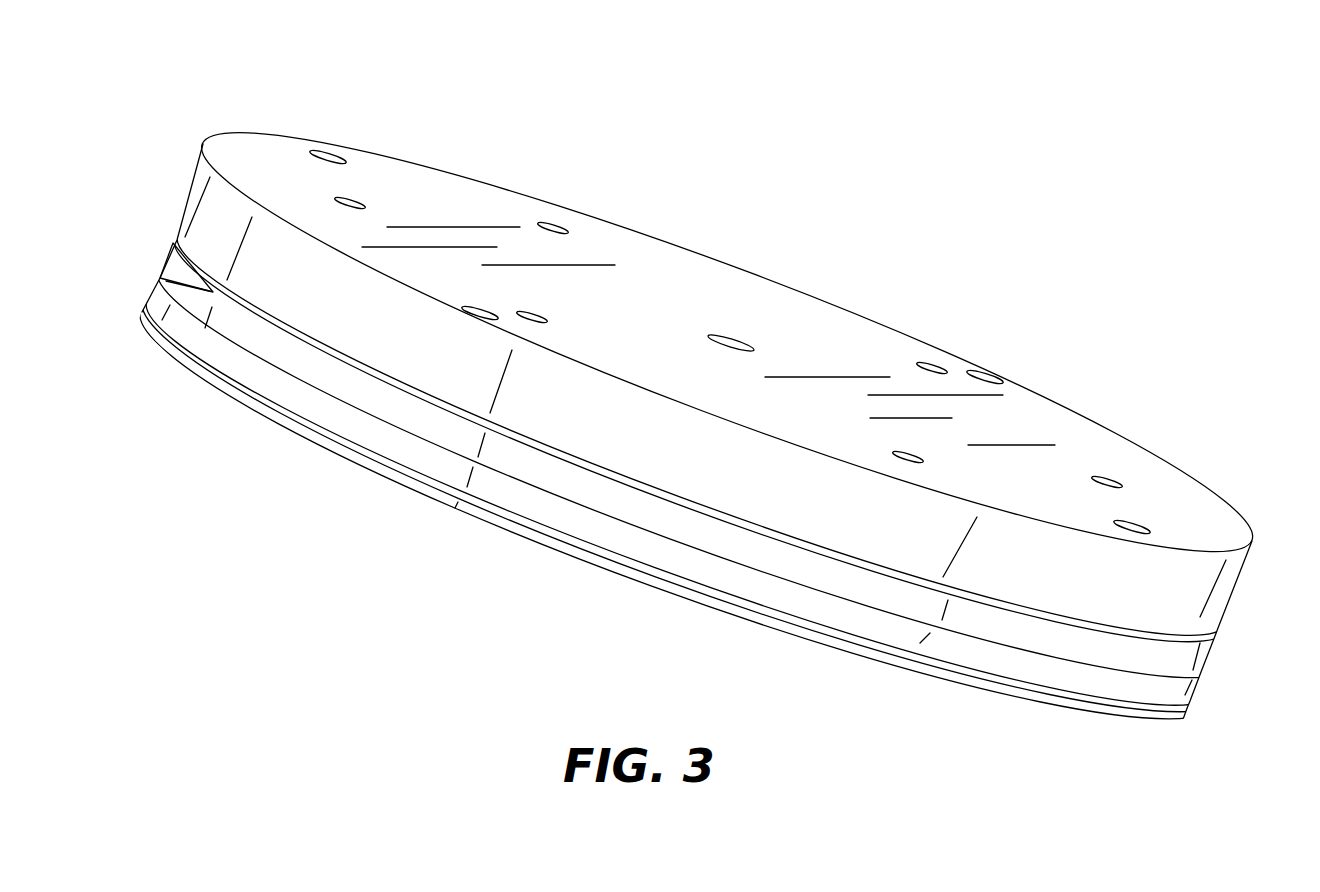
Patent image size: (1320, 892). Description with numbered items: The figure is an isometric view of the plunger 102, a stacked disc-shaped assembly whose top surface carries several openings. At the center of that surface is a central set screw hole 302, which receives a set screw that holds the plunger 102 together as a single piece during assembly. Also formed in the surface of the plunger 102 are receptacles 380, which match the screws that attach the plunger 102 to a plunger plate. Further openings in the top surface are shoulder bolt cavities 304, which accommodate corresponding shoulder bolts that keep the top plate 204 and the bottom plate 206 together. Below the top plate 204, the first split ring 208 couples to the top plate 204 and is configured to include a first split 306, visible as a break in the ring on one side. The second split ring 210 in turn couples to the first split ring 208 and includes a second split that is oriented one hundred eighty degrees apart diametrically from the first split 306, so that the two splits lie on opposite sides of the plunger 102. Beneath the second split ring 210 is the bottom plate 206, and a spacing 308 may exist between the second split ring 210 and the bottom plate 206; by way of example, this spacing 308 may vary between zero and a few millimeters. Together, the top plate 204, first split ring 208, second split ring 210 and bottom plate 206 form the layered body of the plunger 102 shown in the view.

The plunger 102 is at (905, 211).
The top plate 204 is at (795, 513).
The bottom plate 206 is at (847, 652).
The first split ring 208 is at (1216, 646).
The second split ring 210 is at (1194, 683).
The central set screw hole 302 is at (752, 351).
The shoulder bolt cavities 304 is at (333, 154).
The first split 306 is at (172, 282).
The spacing 308 is at (1097, 708).
The receptacles 380 is at (368, 207).